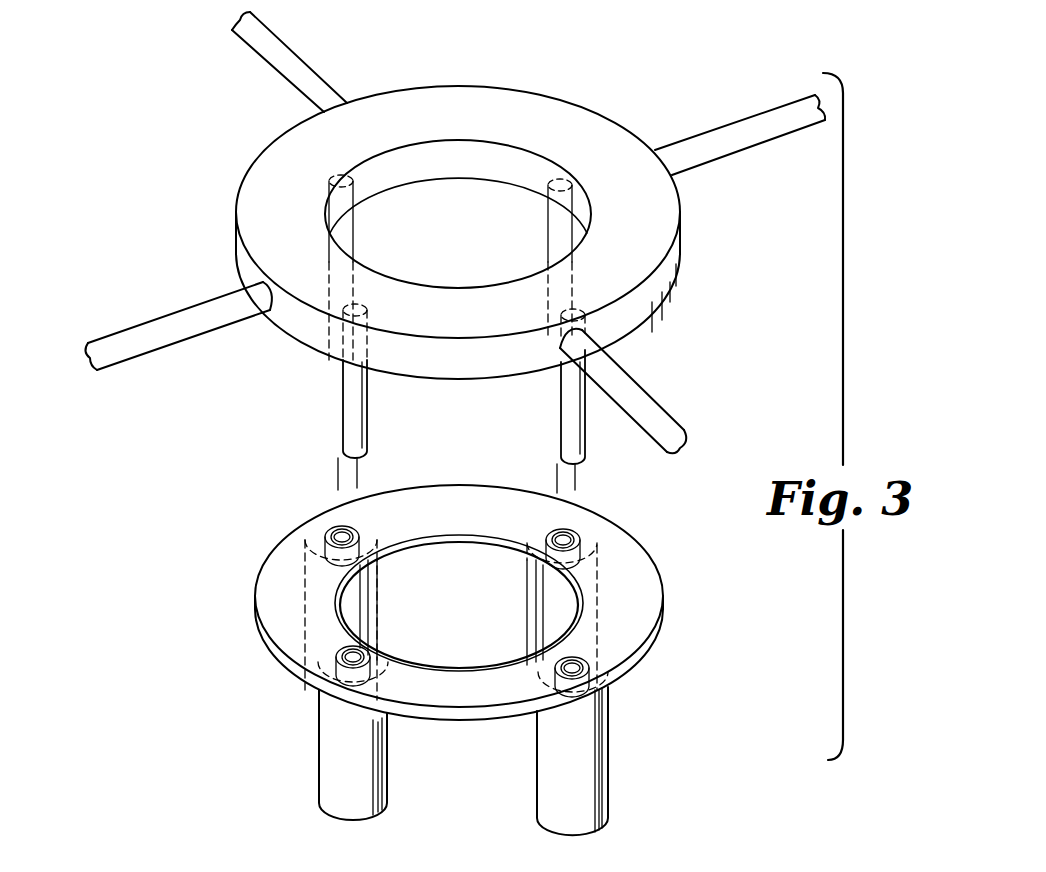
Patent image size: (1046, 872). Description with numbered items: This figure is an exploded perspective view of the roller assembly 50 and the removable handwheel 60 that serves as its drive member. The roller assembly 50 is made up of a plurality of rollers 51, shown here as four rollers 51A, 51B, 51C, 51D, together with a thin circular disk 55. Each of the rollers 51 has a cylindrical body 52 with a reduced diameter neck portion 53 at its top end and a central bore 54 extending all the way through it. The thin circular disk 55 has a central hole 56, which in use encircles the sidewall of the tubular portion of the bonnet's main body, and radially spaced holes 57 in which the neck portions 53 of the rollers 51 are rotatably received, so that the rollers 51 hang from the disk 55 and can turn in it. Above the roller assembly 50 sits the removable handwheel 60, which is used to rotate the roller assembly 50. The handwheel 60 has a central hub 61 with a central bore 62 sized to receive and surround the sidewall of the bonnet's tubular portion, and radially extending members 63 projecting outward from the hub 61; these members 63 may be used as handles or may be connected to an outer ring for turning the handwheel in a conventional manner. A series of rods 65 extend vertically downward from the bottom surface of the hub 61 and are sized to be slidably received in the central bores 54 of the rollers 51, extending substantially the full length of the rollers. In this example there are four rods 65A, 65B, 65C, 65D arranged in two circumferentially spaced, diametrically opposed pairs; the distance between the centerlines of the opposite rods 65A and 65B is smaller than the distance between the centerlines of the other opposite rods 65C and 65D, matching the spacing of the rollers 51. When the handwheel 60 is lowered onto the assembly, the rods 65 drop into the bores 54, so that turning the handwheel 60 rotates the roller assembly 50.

The roller assembly 50 is at (648, 538).
The rollers 51 is at (313, 734).
The roller 51A is at (332, 782).
The roller 51B is at (528, 613).
The roller 51C is at (605, 787).
The roller 51D is at (378, 618).
The cylindrical body 52 is at (378, 590).
The neck portion 53 is at (305, 530).
The central bore 54 is at (338, 533).
The thin circular disk 55 is at (255, 600).
The central hole 56 is at (496, 542).
The radially spaced holes 57 is at (365, 538).
The removable handwheel 60 is at (638, 108).
The central hub 61 is at (508, 103).
The central bore 62 is at (396, 178).
The radially extending members 63 is at (298, 66).
The rods 65 is at (337, 391).
The rod 65A is at (366, 441).
The rod 65B is at (562, 238).
The rod 65C is at (562, 446).
The rod 65D is at (355, 246).